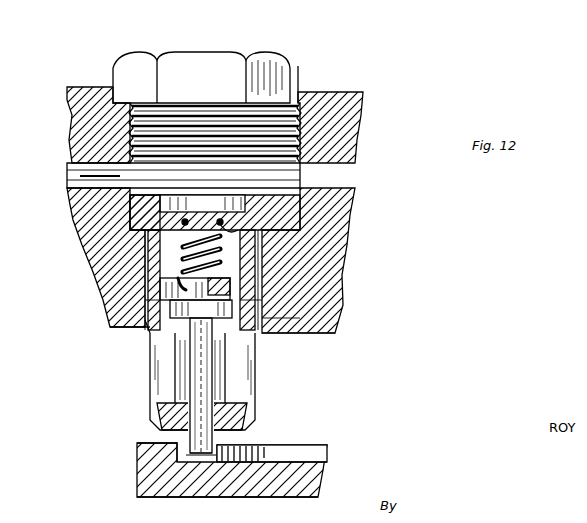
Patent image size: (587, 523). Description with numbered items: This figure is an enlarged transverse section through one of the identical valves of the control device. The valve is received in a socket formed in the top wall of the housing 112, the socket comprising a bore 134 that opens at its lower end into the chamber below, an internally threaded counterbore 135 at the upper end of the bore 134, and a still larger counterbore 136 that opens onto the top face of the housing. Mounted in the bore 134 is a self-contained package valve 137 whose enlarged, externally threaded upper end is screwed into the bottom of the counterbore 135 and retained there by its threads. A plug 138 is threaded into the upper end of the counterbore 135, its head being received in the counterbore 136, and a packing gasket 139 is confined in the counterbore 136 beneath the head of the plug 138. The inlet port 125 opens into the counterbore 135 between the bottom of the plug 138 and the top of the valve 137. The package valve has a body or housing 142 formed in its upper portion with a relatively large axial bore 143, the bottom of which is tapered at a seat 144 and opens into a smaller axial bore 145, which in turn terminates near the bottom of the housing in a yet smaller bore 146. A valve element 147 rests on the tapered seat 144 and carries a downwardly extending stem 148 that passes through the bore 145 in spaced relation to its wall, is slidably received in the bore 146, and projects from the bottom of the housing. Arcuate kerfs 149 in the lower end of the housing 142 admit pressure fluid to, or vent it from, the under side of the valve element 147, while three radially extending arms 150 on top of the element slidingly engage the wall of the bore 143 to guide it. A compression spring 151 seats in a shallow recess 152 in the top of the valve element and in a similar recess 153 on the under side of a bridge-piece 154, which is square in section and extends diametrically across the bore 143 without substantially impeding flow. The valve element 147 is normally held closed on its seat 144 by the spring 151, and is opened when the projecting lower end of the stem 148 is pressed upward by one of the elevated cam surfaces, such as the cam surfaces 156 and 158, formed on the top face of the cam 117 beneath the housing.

The housing 112 is at (352, 100).
The cam 117 is at (285, 490).
The inlet port 125 is at (80, 178).
The bore 134 is at (165, 289).
The internally threaded counterbore 135 is at (268, 187).
The counterbore 136 is at (80, 110).
The package valve 137 is at (140, 360).
The plug 138 is at (243, 68).
The packing gasket 139 is at (298, 72).
The valve body or housing 142 is at (258, 277).
The axial bore 143 is at (262, 255).
The tapered valve seat 144 is at (150, 326).
The axial bore 145 is at (228, 345).
The bore 146 is at (212, 447).
The valve element 147 is at (262, 319).
The valve stem 148 is at (205, 395).
The arcuate kerfs or slots 149 is at (190, 385).
The radially extending arms 150 is at (160, 300).
The compression spring 151 is at (130, 248).
The shallow recess 152 is at (180, 262).
The recess 153 is at (268, 232).
The bridge-piece 154 is at (155, 212).
The elevated cam surface 156 is at (313, 455).
The elevated cam surface 158 is at (155, 452).